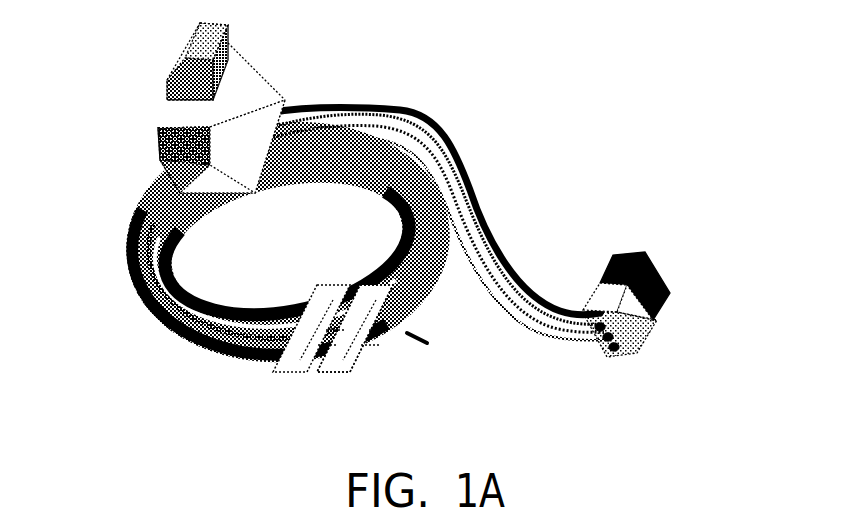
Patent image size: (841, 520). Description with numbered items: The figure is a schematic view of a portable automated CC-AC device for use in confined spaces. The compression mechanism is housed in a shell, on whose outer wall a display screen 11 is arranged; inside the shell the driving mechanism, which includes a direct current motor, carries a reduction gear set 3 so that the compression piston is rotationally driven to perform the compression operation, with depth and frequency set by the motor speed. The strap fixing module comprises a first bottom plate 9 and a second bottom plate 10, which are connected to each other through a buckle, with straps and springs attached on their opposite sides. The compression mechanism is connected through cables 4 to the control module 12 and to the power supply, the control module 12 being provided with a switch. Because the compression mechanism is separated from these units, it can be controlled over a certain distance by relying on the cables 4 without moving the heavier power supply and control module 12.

The reduction gear set 3 is at (220, 43).
The cables 4 is at (466, 187).
The first bottom plate 9 is at (342, 367).
The second bottom plate 10 is at (290, 367).
The display screen 11 is at (200, 161).
The control module 12 is at (630, 325).